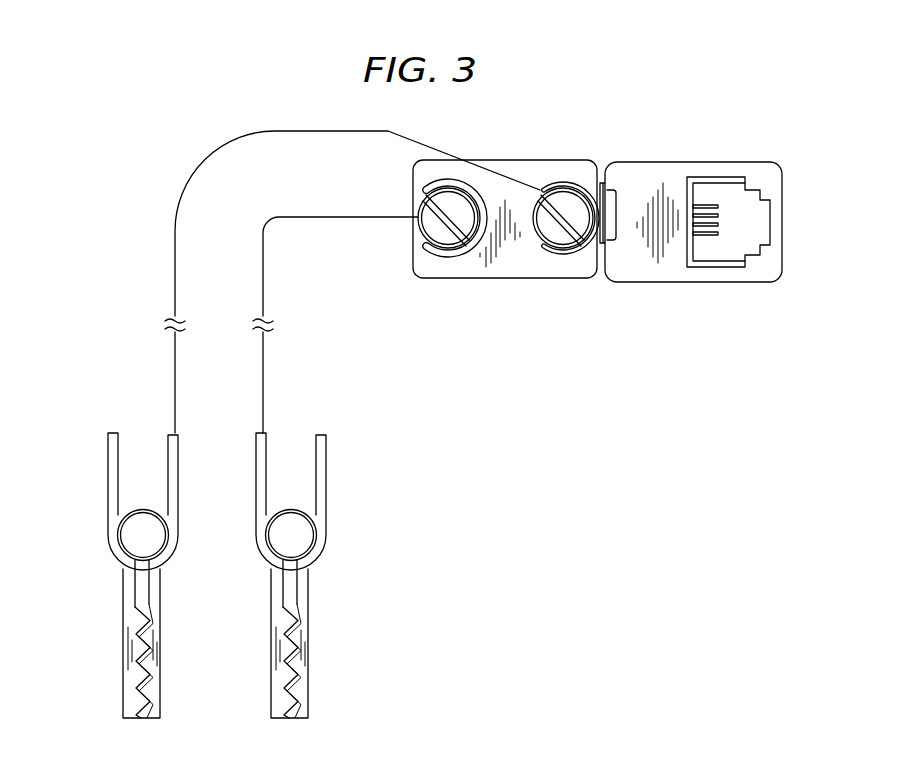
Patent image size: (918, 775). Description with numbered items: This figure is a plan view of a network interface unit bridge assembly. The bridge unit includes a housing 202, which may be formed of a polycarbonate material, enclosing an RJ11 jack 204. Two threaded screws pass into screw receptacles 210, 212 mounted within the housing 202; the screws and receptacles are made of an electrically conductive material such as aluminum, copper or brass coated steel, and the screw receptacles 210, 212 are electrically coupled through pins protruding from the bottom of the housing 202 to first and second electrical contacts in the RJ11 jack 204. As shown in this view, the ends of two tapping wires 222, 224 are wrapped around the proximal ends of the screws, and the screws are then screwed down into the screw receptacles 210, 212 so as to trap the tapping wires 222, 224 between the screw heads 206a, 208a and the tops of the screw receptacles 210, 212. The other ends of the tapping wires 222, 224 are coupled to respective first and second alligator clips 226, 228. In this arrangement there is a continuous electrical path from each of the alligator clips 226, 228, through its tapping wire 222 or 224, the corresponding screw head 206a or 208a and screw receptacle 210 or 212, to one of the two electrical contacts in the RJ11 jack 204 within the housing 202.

The housing 202 is at (721, 162).
The RJ11 jack 204 is at (760, 222).
The screw head 206a is at (572, 204).
The screw head 208a is at (458, 204).
The screw receptacle 210 is at (564, 263).
The screw receptacle 212 is at (457, 262).
The tapping wire 222 is at (227, 146).
The tapping wire 224 is at (265, 226).
The first alligator clip 226 is at (122, 660).
The second alligator clip 228 is at (270, 663).